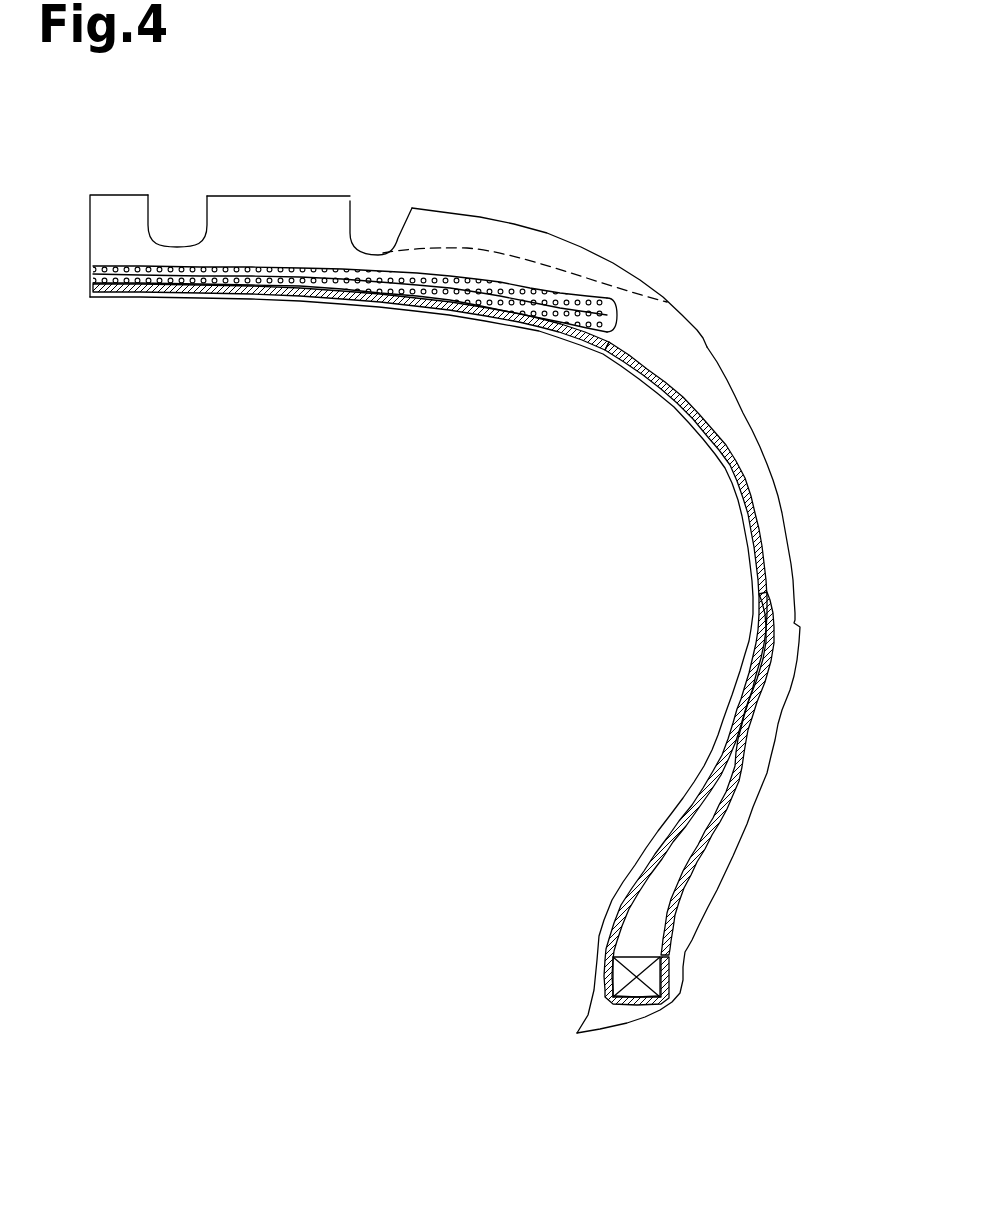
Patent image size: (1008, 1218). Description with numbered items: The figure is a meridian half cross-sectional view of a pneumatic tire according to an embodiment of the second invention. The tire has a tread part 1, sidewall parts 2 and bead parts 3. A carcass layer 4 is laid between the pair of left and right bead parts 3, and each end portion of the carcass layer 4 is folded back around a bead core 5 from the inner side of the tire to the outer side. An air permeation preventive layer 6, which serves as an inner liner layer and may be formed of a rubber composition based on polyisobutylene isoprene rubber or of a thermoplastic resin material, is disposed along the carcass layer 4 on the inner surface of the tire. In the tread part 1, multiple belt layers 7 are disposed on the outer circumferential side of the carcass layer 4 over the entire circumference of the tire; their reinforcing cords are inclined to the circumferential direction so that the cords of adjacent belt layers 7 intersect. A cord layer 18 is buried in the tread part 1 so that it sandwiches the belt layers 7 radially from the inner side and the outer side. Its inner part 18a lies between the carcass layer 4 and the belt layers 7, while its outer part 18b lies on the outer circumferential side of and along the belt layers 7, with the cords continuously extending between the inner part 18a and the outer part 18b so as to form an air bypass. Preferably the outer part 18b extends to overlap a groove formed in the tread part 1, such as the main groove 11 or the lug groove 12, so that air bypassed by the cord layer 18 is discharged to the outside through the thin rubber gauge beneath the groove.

The tread part 1 is at (296, 190).
The sidewall parts 2 is at (792, 713).
The bead parts 3 is at (692, 970).
The carcass layer 4 is at (746, 482).
The bead core 5 is at (618, 978).
The air permeation preventive layer 6 is at (750, 551).
The belt layers 7 is at (293, 291).
The main groove 11 is at (156, 226).
The lug groove 12 is at (468, 248).
The cord layer 18 is at (592, 295).
The inner part of the cord layer 18a is at (585, 328).
The outer part of the cord layer 18b is at (563, 294).